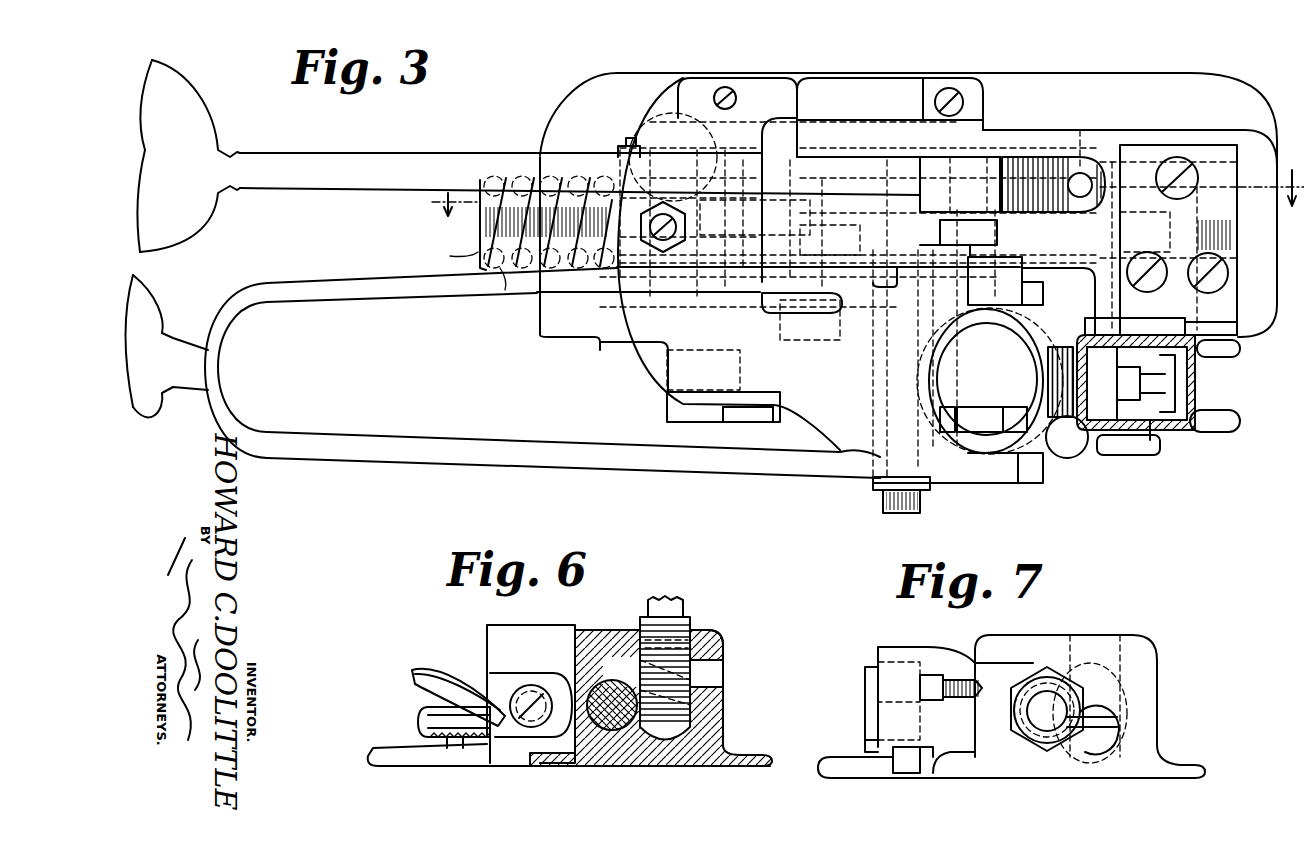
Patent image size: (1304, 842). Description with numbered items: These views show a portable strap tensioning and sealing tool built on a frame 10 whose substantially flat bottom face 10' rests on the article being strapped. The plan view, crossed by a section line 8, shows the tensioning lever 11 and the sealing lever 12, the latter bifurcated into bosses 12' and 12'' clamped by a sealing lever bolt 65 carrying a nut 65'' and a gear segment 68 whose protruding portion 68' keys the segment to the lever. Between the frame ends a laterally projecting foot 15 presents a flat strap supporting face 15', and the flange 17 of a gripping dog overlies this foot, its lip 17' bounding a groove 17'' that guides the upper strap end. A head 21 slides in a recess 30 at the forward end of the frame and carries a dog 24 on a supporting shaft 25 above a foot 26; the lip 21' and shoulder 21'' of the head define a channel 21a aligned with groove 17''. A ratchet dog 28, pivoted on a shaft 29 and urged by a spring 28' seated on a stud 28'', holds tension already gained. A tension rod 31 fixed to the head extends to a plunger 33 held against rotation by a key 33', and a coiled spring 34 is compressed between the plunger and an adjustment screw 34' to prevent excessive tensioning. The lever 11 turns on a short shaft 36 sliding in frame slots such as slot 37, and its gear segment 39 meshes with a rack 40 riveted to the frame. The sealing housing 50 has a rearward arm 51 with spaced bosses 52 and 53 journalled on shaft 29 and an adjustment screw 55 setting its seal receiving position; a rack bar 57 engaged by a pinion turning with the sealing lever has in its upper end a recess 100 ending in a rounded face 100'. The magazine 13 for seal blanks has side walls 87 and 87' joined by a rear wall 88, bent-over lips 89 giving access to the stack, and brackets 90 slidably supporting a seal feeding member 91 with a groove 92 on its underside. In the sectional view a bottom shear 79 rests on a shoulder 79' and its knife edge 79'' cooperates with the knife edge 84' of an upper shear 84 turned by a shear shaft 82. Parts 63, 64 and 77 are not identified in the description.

In FIG. 3, the section line 8- 8 is at (866, 209).
In FIG. 3, the frame 10 is at (908, 197).
In FIG. 6, the frame 10 is at (651, 677).
In FIG. 7, the frame 10 is at (1011, 692).
In FIG. 6, the bottom face 10' is at (650, 782).
In FIG. 7, the bottom face 10' is at (954, 776).
In FIG. 3, the tensioning lever 11 is at (428, 163).
In FIG. 6, the tensioning lever 11 is at (676, 598).
In FIG. 3, the sealing lever 12 is at (503, 373).
In FIG. 3, the boss 12' is at (958, 486).
In FIG. 3, the boss 12'' is at (989, 281).
In FIG. 3, the magazine 13 is at (1097, 457).
In FIG. 6, the foot 15 is at (432, 762).
In FIG. 6, the strap supporting face 15' is at (430, 763).
In FIG. 6, the flange 17 is at (454, 687).
In FIG. 6, the lip 17' is at (440, 701).
In FIG. 6, the channel 17'' is at (437, 722).
In FIG. 3, the head 21 is at (1194, 240).
In FIG. 7, the head 21 is at (950, 677).
In FIG. 7, the lip 21' is at (849, 738).
In FIG. 7, the shoulder 21'' is at (949, 740).
In FIG. 7, the channel 21a is at (905, 773).
In FIG. 7, the dog 24 is at (865, 713).
In FIG. 7, the supporting shaft 25 is at (864, 680).
In FIG. 7, the foot 26 is at (835, 775).
In FIG. 3, the dog 28 is at (709, 421).
In FIG. 3, the spring 28' is at (723, 429).
In FIG. 3, the stud 28'' is at (785, 429).
In FIG. 3, the shaft 29 is at (762, 73).
In FIG. 7, the recess 30 is at (1045, 666).
In FIG. 3, the tension rod 31 is at (1158, 190).
In FIG. 6, the tension rod 31 is at (615, 680).
In FIG. 7, the tension rod 31 is at (1040, 722).
In FIG. 3, the plunger 33 is at (606, 149).
In FIG. 3, the key 33' is at (622, 129).
In FIG. 3, the coiled spring 34 is at (546, 248).
In FIG. 3, the adjustment screw 34' is at (436, 259).
In FIG. 6, the shaft 36 is at (723, 672).
In FIG. 6, the slot 37 is at (723, 650).
In FIG. 6, the gear segment 39 is at (700, 638).
In FIG. 3, the rack 40 is at (1047, 157).
In FIG. 6, the rack 40 is at (690, 715).
In FIG. 7, the rack 40 is at (1115, 722).
In FIG. 3, the sealing housing 50 is at (1043, 318).
In FIG. 3, the arm 51 is at (660, 357).
In FIG. 3, the boss 52 is at (690, 405).
In FIG. 3, the boss 53 is at (797, 96).
In FIG. 3, the adjustment screw 55 is at (664, 207).
In FIG. 3, the rack bar 57 is at (986, 381).
In FIG. 3, the cover 63 is at (878, 86).
In FIG. 3, the screw 64 is at (724, 87).
In FIG. 3, the sealing lever bolt 65 is at (902, 510).
In FIG. 3, the nut 65'' is at (860, 507).
In FIG. 3, the gear segment 68 is at (977, 243).
In FIG. 3, the protruding portion 68' is at (829, 290).
In FIG. 3, the block 77 is at (998, 228).
In FIG. 6, the bottom shear 79 is at (419, 731).
In FIG. 6, the shoulder 79' is at (508, 764).
In FIG. 6, the knife edge 79'' is at (469, 764).
In FIG. 6, the shear shaft 82 is at (538, 690).
In FIG. 6, the upper shear 84 is at (434, 692).
In FIG. 6, the knife edge 84' is at (454, 672).
In FIG. 3, the side wall 87 is at (1157, 452).
In FIG. 3, the side wall 87' is at (1161, 314).
In FIG. 3, the rear wall 88 is at (1072, 345).
In FIG. 3, the lips 89 is at (1240, 350).
In FIG. 3, the brackets 90 is at (1190, 390).
In FIG. 3, the seal feeding member 91 is at (1152, 384).
In FIG. 3, the groove 92 is at (1165, 440).
In FIG. 3, the recess 100 is at (995, 409).
In FIG. 3, the rounded face 100' is at (969, 405).